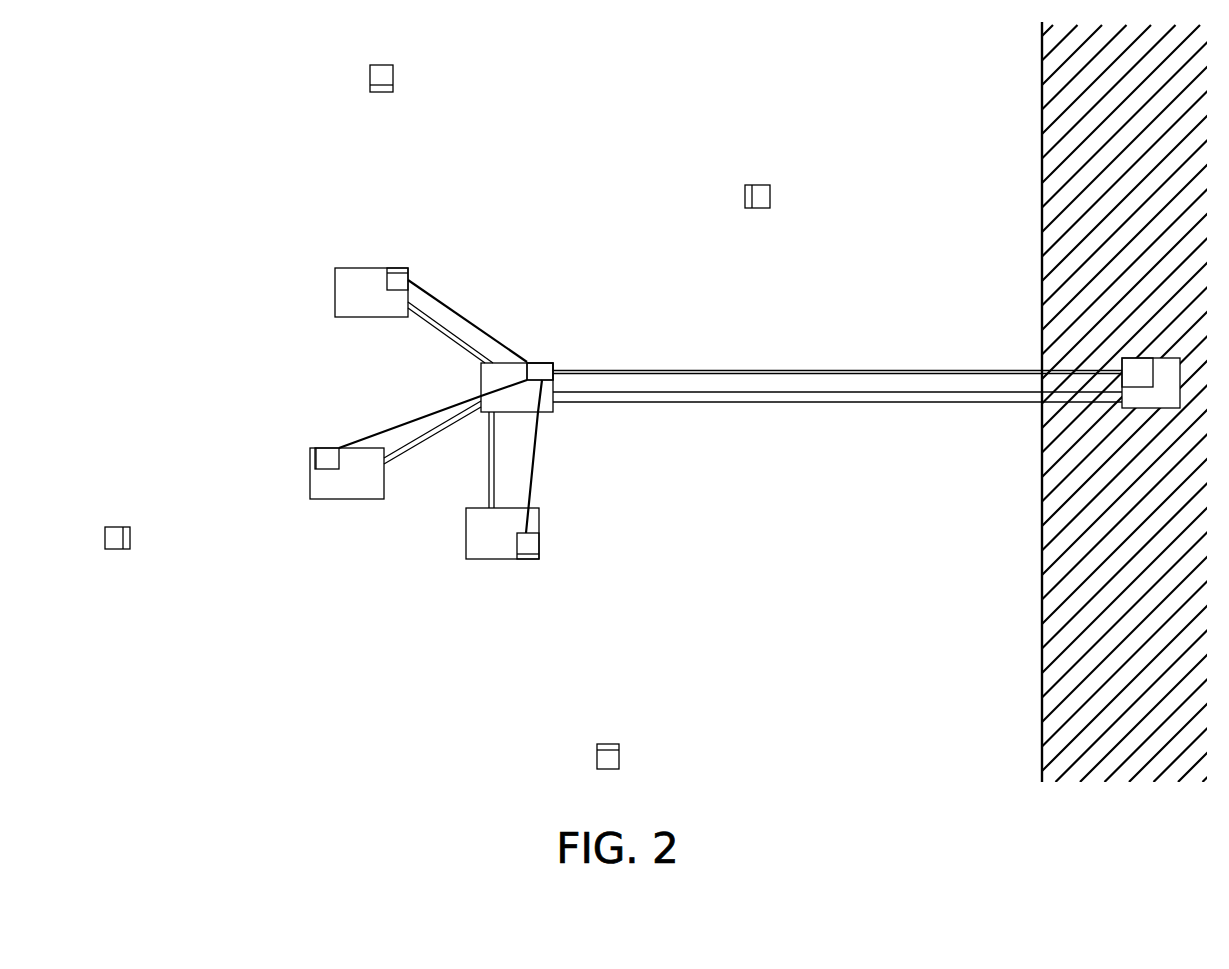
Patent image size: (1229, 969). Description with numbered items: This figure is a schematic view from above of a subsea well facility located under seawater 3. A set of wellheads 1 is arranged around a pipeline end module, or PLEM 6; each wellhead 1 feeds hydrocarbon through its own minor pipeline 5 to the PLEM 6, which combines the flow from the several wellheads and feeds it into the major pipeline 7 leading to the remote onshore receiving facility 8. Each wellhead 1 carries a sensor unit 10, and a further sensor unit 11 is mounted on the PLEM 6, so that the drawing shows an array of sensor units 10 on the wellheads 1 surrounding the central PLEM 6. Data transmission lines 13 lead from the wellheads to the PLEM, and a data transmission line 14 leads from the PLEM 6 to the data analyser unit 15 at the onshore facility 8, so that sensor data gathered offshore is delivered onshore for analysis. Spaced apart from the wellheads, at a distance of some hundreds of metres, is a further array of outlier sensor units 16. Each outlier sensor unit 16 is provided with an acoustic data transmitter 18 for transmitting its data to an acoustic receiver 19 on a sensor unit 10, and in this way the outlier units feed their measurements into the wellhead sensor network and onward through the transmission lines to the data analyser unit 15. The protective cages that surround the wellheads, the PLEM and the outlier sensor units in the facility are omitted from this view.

The wellhead 1 is at (350, 292).
The seawater 3 is at (742, 589).
The minor pipeline 5 is at (428, 324).
The pipeline end module (PLEM) 6 is at (490, 378).
The major pipeline 7 is at (752, 402).
The onshore receiving facility 8 is at (1158, 403).
The sensor unit 10 is at (400, 279).
The sensor unit 11 is at (540, 367).
The data transmission line 13 is at (470, 322).
The data transmission line 14 is at (703, 370).
The data analyser unit 15 is at (1149, 384).
The outlier sensor unit 16 is at (393, 78).
The acoustic data transmitter 18 is at (370, 88).
The acoustic receiver 19 is at (397, 268).